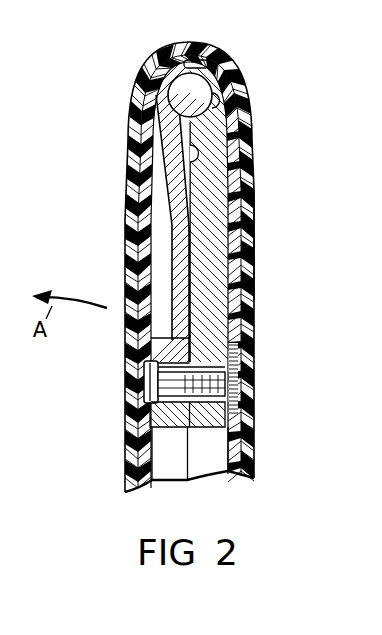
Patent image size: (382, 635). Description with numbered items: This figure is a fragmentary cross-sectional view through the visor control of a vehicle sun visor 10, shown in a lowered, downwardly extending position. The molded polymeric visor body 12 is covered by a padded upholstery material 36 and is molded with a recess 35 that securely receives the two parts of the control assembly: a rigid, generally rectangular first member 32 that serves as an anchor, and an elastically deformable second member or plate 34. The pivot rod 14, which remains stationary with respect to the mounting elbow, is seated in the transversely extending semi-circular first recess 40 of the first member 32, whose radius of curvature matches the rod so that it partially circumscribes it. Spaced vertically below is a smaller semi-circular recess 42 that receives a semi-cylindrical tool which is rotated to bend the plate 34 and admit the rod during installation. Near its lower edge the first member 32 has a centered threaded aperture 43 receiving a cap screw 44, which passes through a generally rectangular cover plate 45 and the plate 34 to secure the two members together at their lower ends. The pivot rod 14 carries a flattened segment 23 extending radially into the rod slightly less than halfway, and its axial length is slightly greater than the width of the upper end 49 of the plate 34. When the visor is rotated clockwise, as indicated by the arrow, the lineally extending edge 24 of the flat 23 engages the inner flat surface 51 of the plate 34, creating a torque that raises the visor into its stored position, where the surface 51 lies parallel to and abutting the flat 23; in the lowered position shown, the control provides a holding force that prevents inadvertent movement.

The visor 10 is at (262, 197).
The visor body 12 is at (163, 225).
The pivot rod 14 is at (152, 72).
The flattened segment 23 is at (190, 62).
The lineally extending edge 24 is at (213, 105).
The first member 32 is at (210, 295).
The second member 34 is at (185, 256).
The recess 35 is at (207, 423).
The padded upholstery material 36 is at (255, 231).
The first recess 40 is at (213, 88).
The semi-circular recess 42 is at (198, 157).
The threaded aperture 43 is at (200, 362).
The cap screw 44 is at (172, 383).
The cover plate 45 is at (160, 428).
The upper end 49 is at (215, 90).
The inner flat surface 51 is at (181, 122).